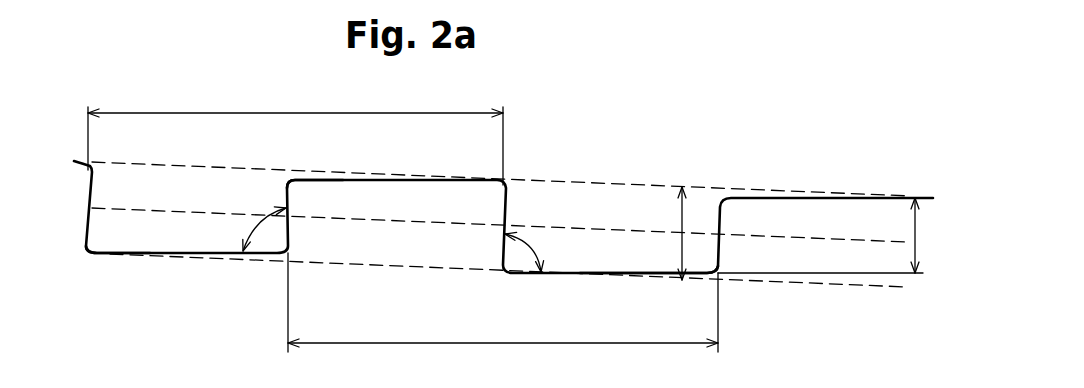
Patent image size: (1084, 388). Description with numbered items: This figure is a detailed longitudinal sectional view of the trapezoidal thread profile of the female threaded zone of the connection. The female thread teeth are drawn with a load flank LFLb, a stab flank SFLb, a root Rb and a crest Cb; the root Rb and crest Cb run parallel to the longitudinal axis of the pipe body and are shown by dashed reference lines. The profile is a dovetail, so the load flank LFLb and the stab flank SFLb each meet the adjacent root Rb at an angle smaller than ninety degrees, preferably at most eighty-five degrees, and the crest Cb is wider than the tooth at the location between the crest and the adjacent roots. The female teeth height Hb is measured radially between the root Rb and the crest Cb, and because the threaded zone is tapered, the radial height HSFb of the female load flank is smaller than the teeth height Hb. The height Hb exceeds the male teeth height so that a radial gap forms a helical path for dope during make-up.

The stab flank SFLb is at (295, 102).
The load flank LFLb is at (503, 330).
The female teeth height Hb is at (682, 223).
The radial height of the female load flank HSFb is at (917, 233).
The root Rb is at (343, 178).
The crest Cb is at (656, 301).